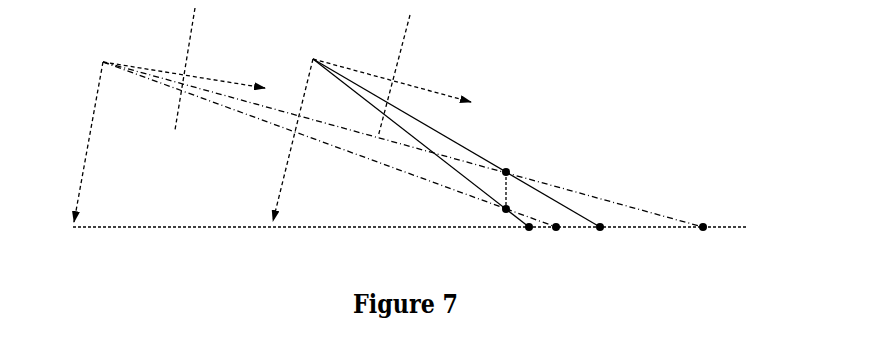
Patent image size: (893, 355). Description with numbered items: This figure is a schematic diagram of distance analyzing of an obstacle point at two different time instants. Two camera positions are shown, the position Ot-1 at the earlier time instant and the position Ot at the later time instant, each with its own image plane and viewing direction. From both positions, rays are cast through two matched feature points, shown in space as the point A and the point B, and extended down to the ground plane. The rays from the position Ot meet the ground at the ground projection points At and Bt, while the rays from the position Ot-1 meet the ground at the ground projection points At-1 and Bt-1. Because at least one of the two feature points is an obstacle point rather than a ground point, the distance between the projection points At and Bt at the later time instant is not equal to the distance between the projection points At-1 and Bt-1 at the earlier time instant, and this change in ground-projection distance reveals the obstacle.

The camera center at time t-1 Ot-1 is at (388, 129).
The camera center at time t Ot is at (436, 129).
The 3D point A is at (513, 177).
The 3D point B is at (512, 199).
The ground projection point of feature point b at time instant t Bt is at (524, 238).
The ground projection point of feature point b at time instant t-1 Bt-1 is at (560, 238).
The ground projection point of feature point a at time instant t At is at (603, 238).
The ground projection point of feature point a at time instant t-1 At-1 is at (699, 238).